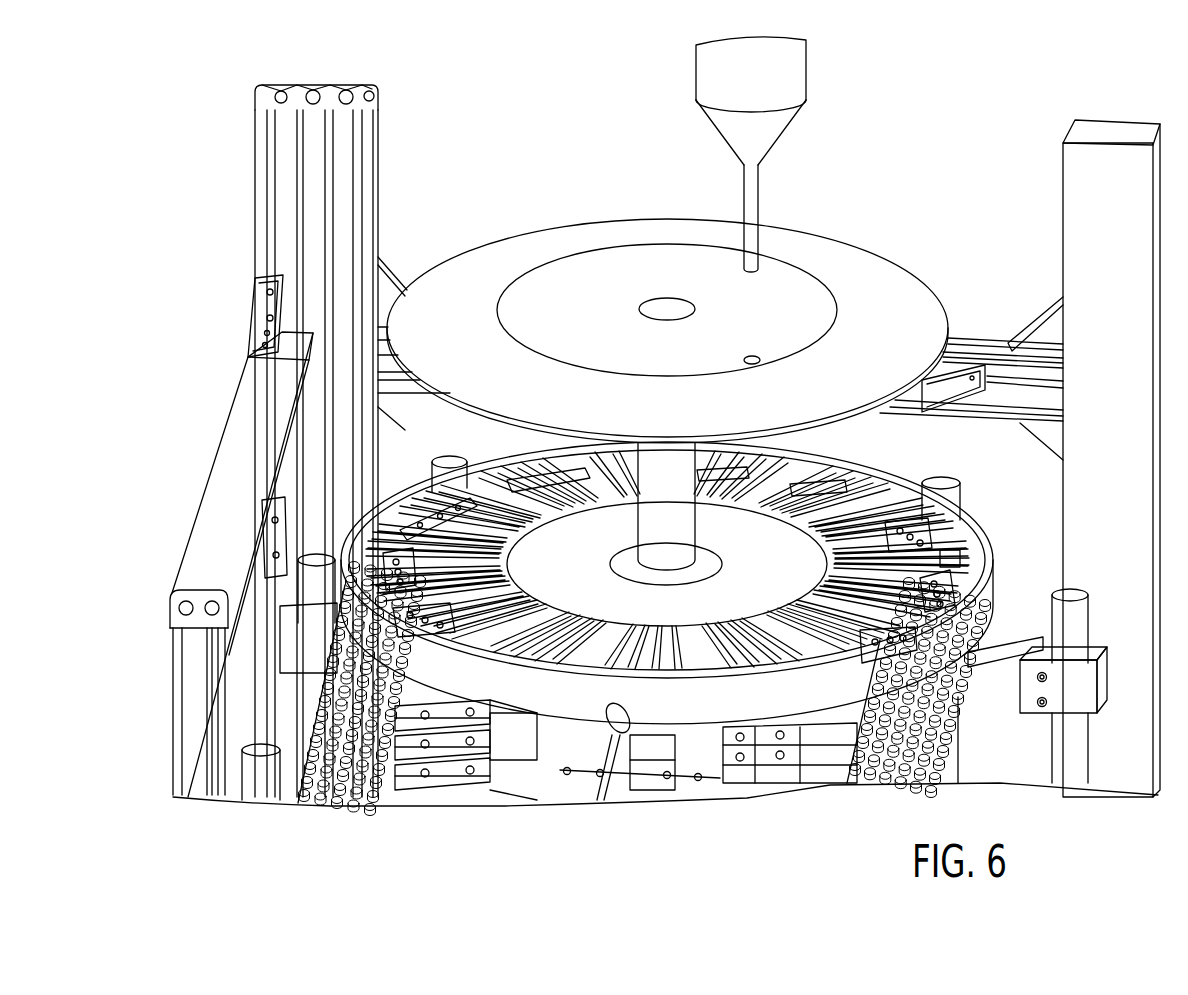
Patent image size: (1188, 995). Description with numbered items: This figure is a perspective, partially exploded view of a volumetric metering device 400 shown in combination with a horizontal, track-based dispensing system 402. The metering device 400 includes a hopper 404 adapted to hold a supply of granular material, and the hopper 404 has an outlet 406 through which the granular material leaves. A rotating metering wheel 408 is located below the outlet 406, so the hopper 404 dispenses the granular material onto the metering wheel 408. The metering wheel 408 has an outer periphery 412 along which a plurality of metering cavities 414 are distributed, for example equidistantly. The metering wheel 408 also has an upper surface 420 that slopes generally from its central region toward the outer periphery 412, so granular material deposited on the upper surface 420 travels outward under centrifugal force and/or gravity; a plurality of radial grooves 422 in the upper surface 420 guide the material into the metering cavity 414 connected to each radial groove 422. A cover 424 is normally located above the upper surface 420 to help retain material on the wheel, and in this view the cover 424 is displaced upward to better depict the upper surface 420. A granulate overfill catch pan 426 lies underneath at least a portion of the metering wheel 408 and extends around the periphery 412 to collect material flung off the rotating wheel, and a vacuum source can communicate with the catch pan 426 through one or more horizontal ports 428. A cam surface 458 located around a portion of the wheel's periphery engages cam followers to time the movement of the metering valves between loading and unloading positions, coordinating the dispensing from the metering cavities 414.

The metering device 400 is at (972, 258).
The horizontal, track-based dispensing system 402 is at (968, 745).
The hopper 404 is at (798, 73).
The outlet 406 is at (758, 196).
The rotating metering wheel 408 is at (756, 546).
The outer periphery 412 is at (892, 513).
The metering cavities 414 is at (937, 545).
The upper surface 420 is at (662, 600).
The radial grooves 422 is at (489, 612).
The cover 424 is at (580, 228).
The granulate overfill catch pan 426 is at (786, 700).
The horizontal ports 428 is at (623, 727).
The cam surface 458 is at (497, 483).